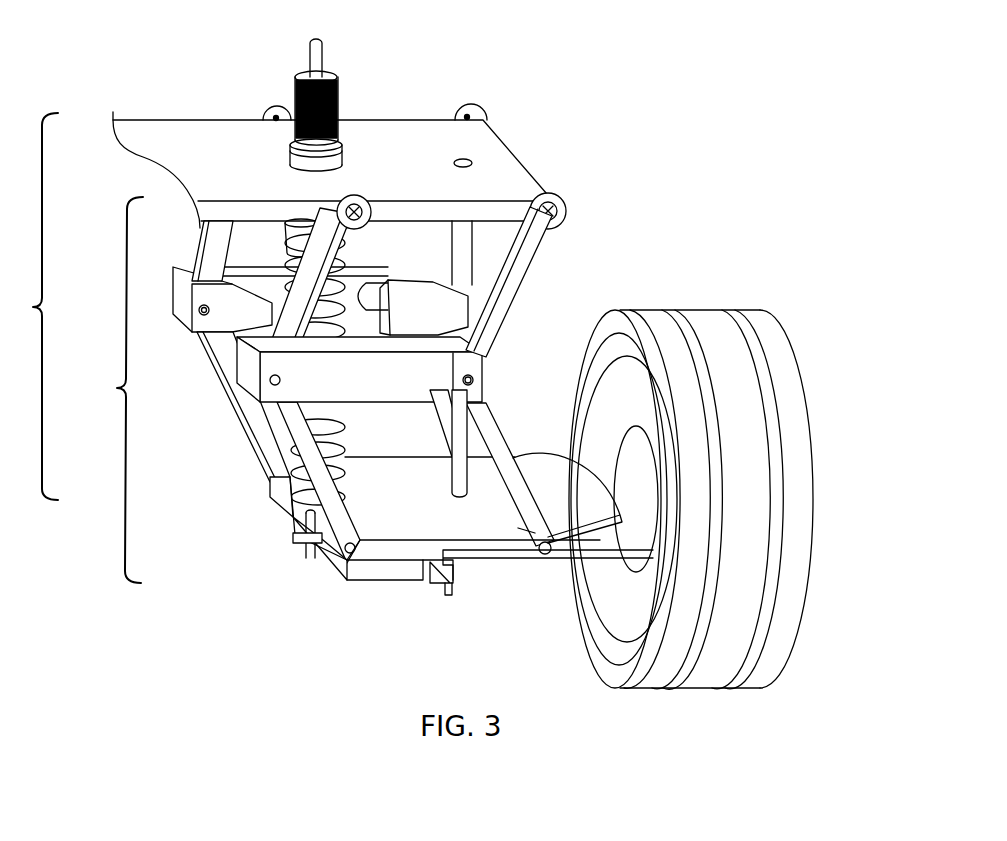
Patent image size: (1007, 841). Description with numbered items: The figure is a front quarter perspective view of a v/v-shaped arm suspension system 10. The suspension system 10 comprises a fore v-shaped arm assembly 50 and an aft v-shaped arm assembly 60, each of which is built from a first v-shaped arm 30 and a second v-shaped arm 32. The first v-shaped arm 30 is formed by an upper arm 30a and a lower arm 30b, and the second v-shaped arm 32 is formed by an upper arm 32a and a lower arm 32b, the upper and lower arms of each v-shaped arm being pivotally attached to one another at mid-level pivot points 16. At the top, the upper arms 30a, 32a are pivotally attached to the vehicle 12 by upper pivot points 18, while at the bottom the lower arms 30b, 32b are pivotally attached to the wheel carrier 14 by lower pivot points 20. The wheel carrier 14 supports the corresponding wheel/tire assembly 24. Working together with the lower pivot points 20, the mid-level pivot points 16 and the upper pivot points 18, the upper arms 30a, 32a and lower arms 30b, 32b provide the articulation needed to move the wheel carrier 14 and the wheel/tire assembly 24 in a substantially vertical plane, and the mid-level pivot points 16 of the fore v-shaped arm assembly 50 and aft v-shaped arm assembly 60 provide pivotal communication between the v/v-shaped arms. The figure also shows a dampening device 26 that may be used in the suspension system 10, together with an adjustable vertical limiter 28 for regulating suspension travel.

The suspension system 10 is at (673, 92).
The vehicle 12 is at (505, 154).
The wheel carrier 14 is at (397, 548).
The mid-level pivot points 16 is at (198, 313).
The upper pivot points 18 is at (279, 117).
The lower pivot points 20 is at (545, 555).
The wheel/tire assembly 24 is at (787, 637).
The dampening device 26 is at (327, 73).
The adjustable vertical limiter 28 is at (460, 477).
The first v-shaped arm 30 is at (528, 250).
The upper arm 30a is at (417, 238).
The lower arm 30b is at (442, 418).
The second v-shaped arm 32 is at (343, 527).
The upper arm 32a is at (348, 213).
The lower arm 32b is at (222, 357).
The fore v-shaped arm assembly 50 is at (115, 390).
The aft v-shaped arm assembly 60 is at (31, 306).